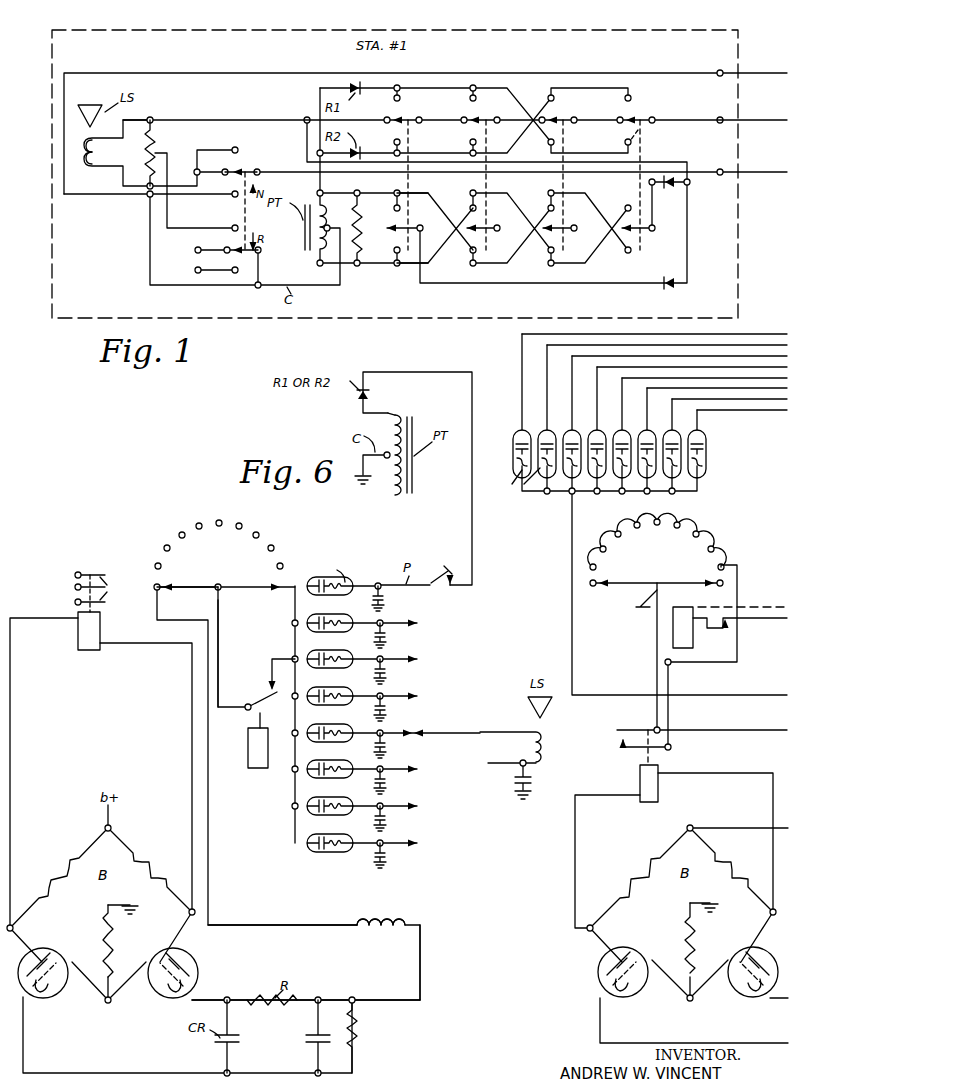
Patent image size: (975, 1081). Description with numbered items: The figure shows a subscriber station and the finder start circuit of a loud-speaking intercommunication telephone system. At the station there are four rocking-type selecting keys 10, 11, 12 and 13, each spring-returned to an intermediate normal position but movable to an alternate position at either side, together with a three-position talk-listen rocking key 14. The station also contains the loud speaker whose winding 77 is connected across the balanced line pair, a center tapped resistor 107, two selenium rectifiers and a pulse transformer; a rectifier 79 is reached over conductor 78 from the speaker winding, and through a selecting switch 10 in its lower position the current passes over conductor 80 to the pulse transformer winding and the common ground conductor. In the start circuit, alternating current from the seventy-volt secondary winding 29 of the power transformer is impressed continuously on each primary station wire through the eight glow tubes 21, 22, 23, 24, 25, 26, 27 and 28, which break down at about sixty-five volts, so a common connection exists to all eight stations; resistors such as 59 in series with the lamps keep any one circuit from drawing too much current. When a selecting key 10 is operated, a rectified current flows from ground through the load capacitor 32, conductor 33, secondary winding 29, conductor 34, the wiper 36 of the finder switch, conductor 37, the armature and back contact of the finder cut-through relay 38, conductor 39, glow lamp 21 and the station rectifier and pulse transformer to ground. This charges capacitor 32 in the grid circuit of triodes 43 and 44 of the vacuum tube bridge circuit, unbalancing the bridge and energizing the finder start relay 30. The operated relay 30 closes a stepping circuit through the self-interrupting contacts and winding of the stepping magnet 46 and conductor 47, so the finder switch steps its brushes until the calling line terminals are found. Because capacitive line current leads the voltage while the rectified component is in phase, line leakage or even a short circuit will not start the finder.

In FIG. 1, the selecting key 10 is at (633, 118).
In FIG. 1, the selecting key 11 is at (557, 117).
In FIG. 1, the selecting key 12 is at (486, 105).
In FIG. 1, the selecting key 13 is at (403, 117).
In FIG. 1, the talk-listen rocking key 14 is at (241, 173).
In FIG. 6, the glow tube 21 is at (706, 436).
In FIG. 6, the glow tube 22 is at (674, 434).
In FIG. 6, the glow tube 23 is at (649, 434).
In FIG. 6, the glow tube 24 is at (624, 434).
In FIG. 6, the glow tube 25 is at (599, 434).
In FIG. 6, the glow tube 26 is at (574, 434).
In FIG. 6, the glow tube 27 is at (549, 434).
In FIG. 6, the glow tube 28 is at (524, 434).
In FIG. 6, the secondary winding of power transformer 29 is at (378, 920).
In FIG. 6, the finder start relay 30 is at (90, 651).
In FIG. 6, the load capacitor 32 is at (308, 1039).
In FIG. 6, the conductor 33 is at (421, 982).
In FIG. 6, the conductor 34 is at (294, 923).
In FIG. 6, the wiper of finder switch 36 is at (197, 585).
In FIG. 6, the conductor 37 is at (222, 654).
In FIG. 6, the finder cut-through relay 38 is at (248, 746).
In FIG. 6, the conductor 39 is at (280, 662).
In FIG. 6, the triode 43 is at (200, 974).
In FIG. 6, the triode 44 is at (55, 943).
In FIG. 6, the stepping magnet 46 is at (694, 634).
In FIG. 6, the conductor 47 is at (670, 724).
In FIG. 6, the resistor 59 is at (512, 484).
In FIG. 1, the winding of loud speaker 77 is at (95, 151).
In FIG. 6, the winding of loud speaker 77 is at (547, 748).
In FIG. 1, the conductor 78 is at (208, 120).
In FIG. 1, the rectifier 79 is at (668, 189).
In FIG. 1, the conductor 80 is at (434, 205).
In FIG. 1, the center tapped resistor 107 is at (156, 141).